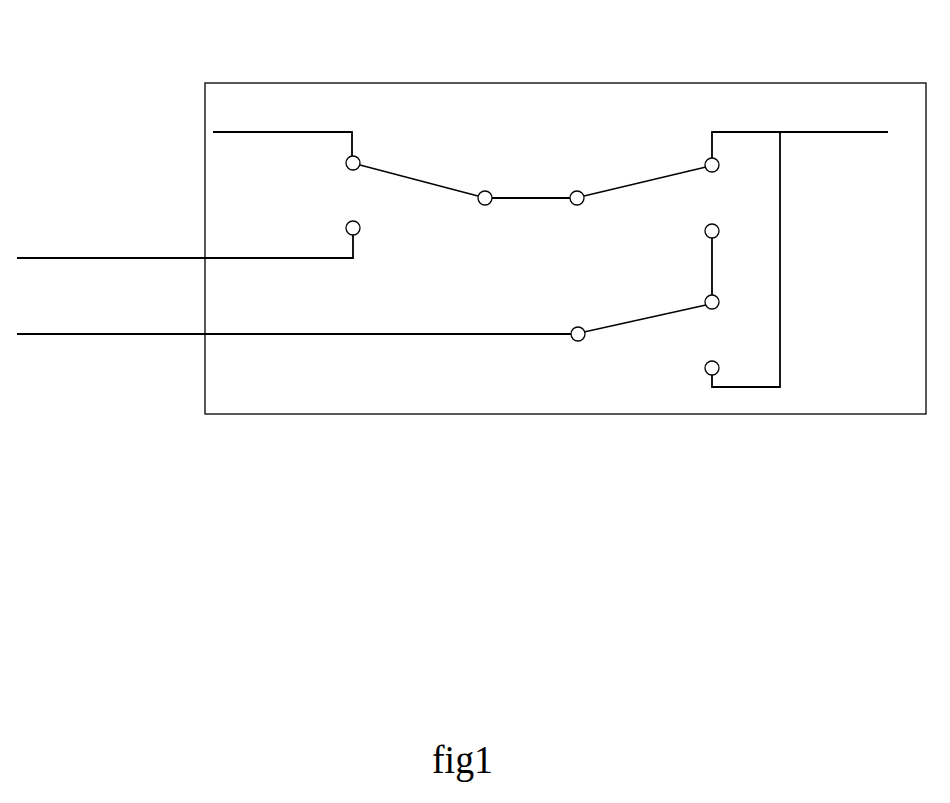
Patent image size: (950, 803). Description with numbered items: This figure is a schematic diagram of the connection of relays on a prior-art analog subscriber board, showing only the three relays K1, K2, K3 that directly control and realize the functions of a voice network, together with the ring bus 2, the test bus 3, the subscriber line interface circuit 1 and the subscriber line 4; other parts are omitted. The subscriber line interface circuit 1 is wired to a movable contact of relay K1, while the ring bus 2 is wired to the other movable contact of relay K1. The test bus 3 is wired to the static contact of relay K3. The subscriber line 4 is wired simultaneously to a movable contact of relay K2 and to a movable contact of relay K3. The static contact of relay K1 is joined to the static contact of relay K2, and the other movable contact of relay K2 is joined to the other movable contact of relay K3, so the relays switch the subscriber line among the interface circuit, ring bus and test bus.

The subscriber line interface circuit 1 is at (268, 119).
The ring bus 2 is at (185, 241).
The test bus 3 is at (294, 317).
The subscriber line 4 is at (811, 241).
The relay K1 is at (436, 202).
The relay K2 is at (605, 218).
The relay K3 is at (629, 341).